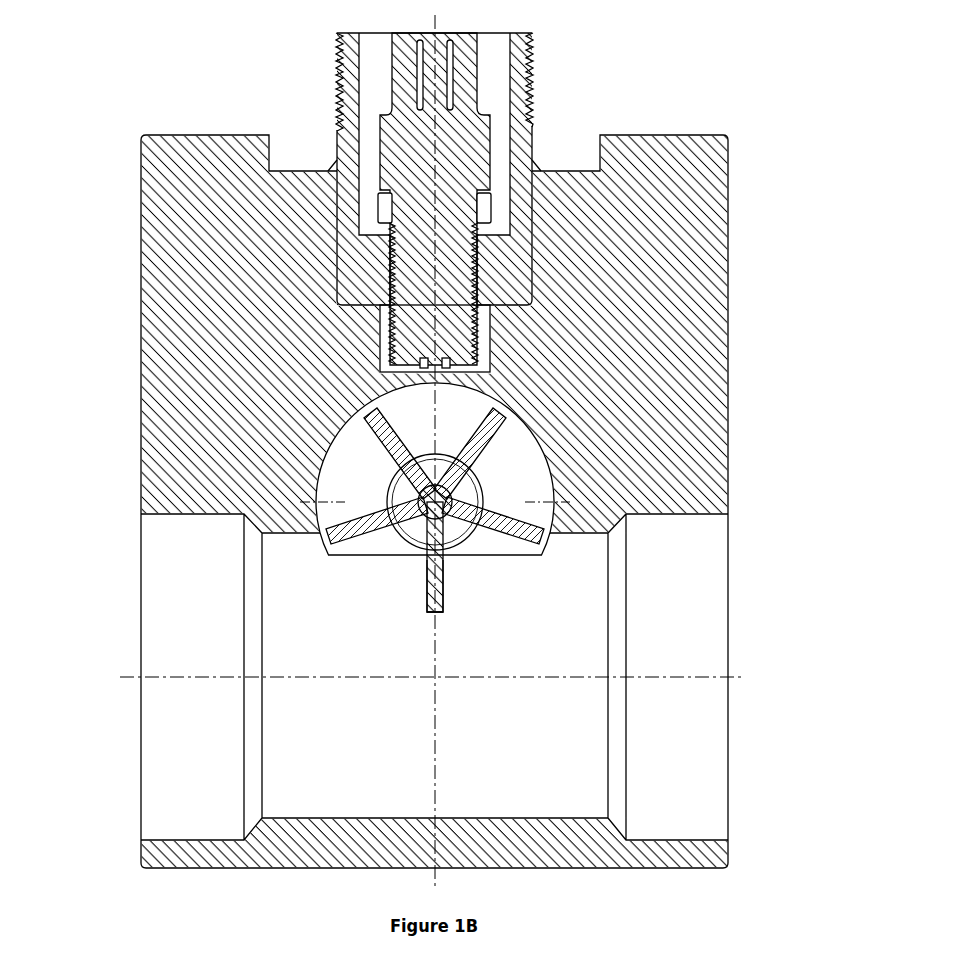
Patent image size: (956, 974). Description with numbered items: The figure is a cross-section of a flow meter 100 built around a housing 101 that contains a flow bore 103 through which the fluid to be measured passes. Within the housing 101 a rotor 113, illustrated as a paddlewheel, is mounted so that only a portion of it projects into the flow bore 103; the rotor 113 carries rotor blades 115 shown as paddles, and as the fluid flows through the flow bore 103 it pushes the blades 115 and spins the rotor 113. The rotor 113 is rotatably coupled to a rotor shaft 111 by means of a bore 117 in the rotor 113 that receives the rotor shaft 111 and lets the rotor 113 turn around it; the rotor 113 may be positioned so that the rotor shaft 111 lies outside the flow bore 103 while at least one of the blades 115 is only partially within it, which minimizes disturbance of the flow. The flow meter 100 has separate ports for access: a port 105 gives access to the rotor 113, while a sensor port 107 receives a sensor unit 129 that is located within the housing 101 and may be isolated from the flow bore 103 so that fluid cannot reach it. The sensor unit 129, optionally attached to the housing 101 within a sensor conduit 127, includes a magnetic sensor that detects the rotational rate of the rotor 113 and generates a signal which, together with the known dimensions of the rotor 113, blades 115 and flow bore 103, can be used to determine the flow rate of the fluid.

The flow meter 100 is at (116, 95).
The housing 101 is at (163, 328).
The flow bore 103 is at (572, 622).
The port 105 is at (547, 447).
The sensor port 107 is at (532, 265).
The rotor shaft 111 is at (435, 503).
The rotor 113 is at (404, 569).
The rotor blades 115 is at (427, 605).
The bore 117 is at (418, 498).
The sensor conduit 127 is at (532, 92).
The sensor unit 129 is at (390, 80).